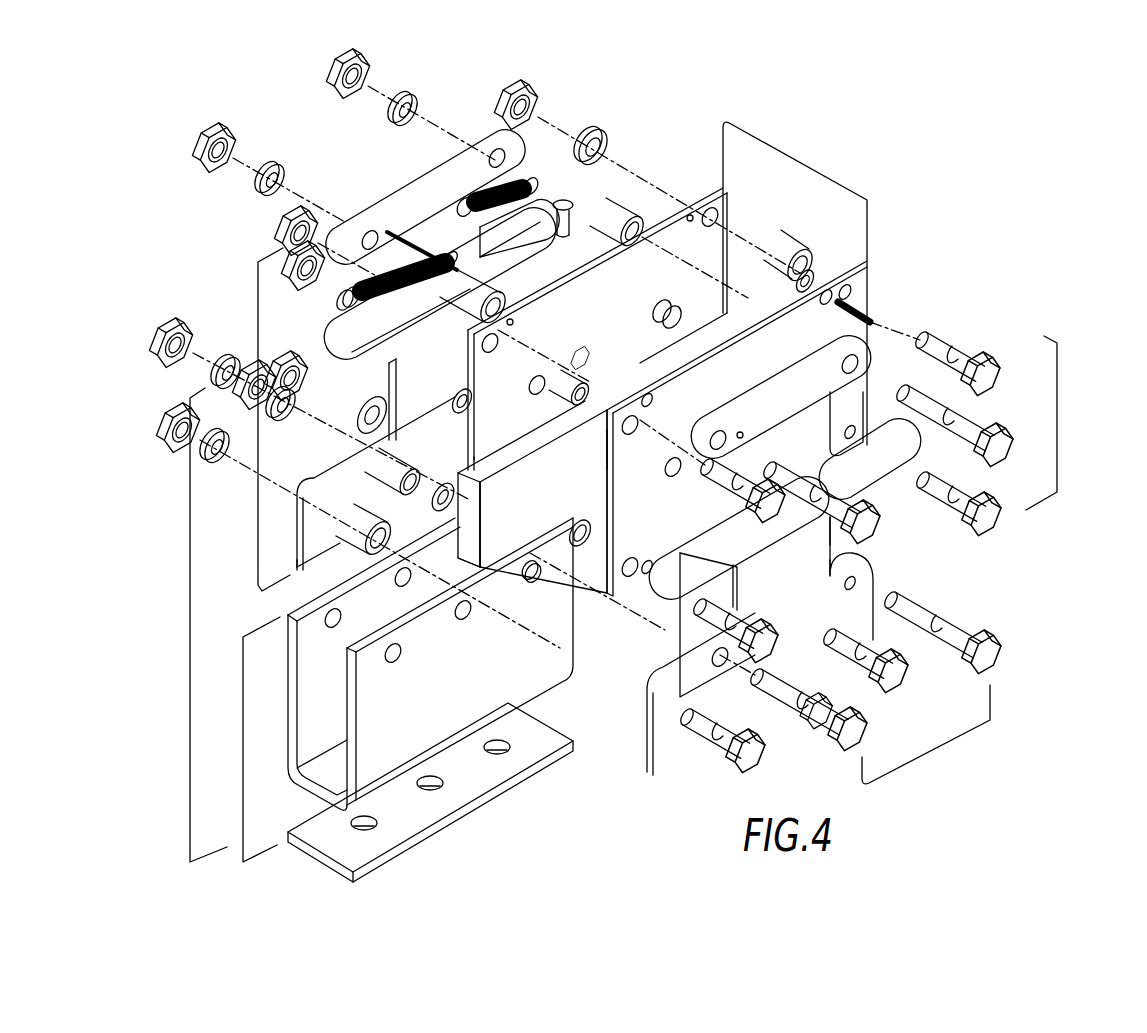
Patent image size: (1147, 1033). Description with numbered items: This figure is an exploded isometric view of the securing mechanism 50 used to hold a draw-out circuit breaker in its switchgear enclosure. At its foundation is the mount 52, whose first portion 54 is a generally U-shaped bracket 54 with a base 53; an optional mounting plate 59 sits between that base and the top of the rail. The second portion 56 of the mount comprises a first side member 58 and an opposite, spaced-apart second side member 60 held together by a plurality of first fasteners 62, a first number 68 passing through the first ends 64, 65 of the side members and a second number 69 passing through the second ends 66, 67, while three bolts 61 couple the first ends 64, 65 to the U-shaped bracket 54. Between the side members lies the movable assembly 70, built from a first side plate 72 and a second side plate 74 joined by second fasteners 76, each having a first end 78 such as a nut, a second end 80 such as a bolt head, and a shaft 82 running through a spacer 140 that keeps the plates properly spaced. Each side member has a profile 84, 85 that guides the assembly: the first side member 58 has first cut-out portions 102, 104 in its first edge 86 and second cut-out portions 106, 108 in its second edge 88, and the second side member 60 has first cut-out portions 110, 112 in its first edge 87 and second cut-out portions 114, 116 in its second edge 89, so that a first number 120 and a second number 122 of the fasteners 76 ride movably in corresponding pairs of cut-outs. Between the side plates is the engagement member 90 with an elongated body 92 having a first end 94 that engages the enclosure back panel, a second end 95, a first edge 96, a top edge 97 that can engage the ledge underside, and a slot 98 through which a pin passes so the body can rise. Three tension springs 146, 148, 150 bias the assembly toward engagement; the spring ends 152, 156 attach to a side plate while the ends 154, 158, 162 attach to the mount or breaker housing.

The securing mechanism 50 is at (1002, 762).
The mount 52 is at (152, 622).
The base 53 is at (328, 780).
The first portion / generally U-shaped bracket 54 is at (247, 739).
The second portion 56 is at (253, 419).
The first side member 58 is at (402, 364).
The mounting plate 59 is at (318, 849).
The second side member 60 is at (777, 559).
The bolts 61 is at (905, 677).
The first fasteners 62 is at (1010, 430).
The first end of first side member 64 is at (285, 575).
The first end of second side member 65 is at (634, 773).
The second end of first side member 66 is at (531, 128).
The second end of second side member 67 is at (881, 330).
The first number of first fasteners 68 is at (926, 737).
The second number of first fasteners 69 is at (912, 402).
The movable assembly 70 is at (784, 149).
The first side plate 72 is at (599, 309).
The second side plate 74 is at (729, 369).
The second fasteners 76 is at (980, 372).
The first ends 78 is at (494, 96).
The second ends 80 is at (1010, 350).
The shafts 82 is at (930, 343).
The profile of first side member 84 is at (358, 418).
The profile of second side member 85 is at (840, 557).
The first edge of first side member 86 is at (285, 498).
The first edge of second side member 87 is at (645, 613).
The second edge of first side member 88 is at (556, 210).
The second edge of second side member 89 is at (885, 408).
The engagement member 90 is at (540, 456).
The elongated body 92 is at (520, 519).
The first end of elongated body 94 is at (449, 577).
The second end of elongated body 95 is at (814, 262).
The first edge of elongated body 96 is at (490, 566).
The second edge / top edge of elongated body 97 is at (498, 462).
The first slot 98 is at (597, 460).
The first cut-out portion 102 is at (397, 396).
The first cut-out portion 104 is at (383, 302).
The second cut-out portion 106 is at (517, 288).
The second cut-out portion 108 is at (480, 234).
The first cut-out portion 110 is at (718, 582).
The first cut-out portion 112 is at (745, 436).
The second cut-out portion 114 is at (830, 526).
The second cut-out portion 116 is at (838, 396).
The first number of second fasteners 120 is at (674, 619).
The second number of second fasteners 122 is at (1060, 423).
The spacers 140 is at (778, 243).
The tension spring 146 is at (490, 196).
The tension spring 148 is at (437, 258).
The tension spring 150 is at (463, 396).
The first end of tension spring 152 is at (545, 172).
The second end of tension spring 154 is at (466, 209).
The first end of tension spring 156 is at (466, 259).
The second end of tension spring 158 is at (340, 276).
The second end of tension spring 162 is at (448, 416).